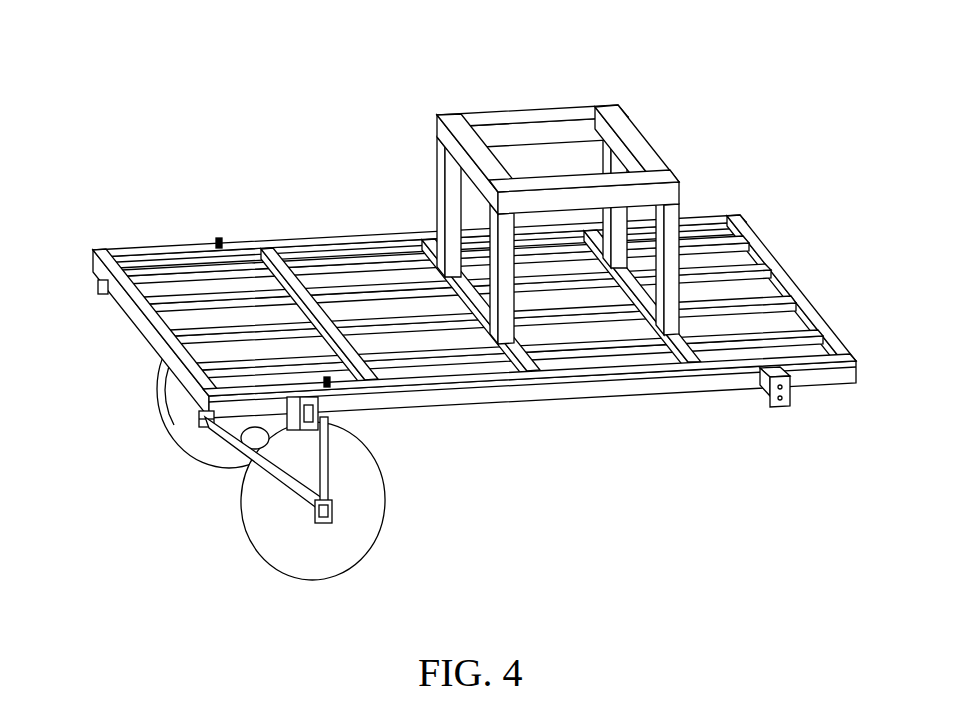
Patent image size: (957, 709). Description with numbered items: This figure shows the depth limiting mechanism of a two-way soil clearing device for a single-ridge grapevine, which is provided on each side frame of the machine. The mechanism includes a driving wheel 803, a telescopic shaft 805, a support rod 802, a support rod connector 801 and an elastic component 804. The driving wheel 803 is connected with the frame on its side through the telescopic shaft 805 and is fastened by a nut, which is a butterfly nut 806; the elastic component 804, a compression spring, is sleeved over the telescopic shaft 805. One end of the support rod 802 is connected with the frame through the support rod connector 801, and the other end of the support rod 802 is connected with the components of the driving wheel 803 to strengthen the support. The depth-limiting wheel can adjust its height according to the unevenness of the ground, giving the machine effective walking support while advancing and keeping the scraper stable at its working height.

The support rod connector 801 is at (205, 421).
The support rod 802 is at (300, 496).
The driving wheel 803 is at (290, 518).
The elastic component 804 is at (334, 507).
The telescopic shaft 805 is at (330, 430).
The butterfly nut 806 is at (335, 390).